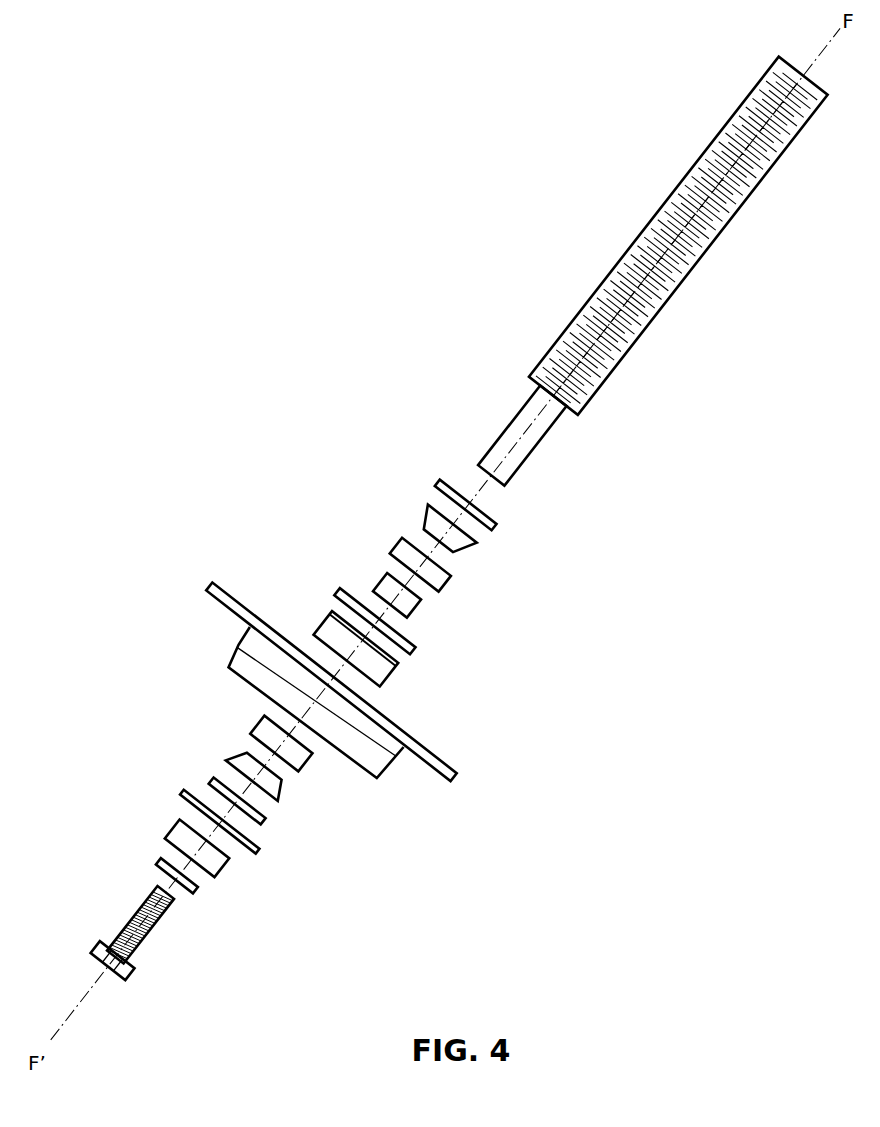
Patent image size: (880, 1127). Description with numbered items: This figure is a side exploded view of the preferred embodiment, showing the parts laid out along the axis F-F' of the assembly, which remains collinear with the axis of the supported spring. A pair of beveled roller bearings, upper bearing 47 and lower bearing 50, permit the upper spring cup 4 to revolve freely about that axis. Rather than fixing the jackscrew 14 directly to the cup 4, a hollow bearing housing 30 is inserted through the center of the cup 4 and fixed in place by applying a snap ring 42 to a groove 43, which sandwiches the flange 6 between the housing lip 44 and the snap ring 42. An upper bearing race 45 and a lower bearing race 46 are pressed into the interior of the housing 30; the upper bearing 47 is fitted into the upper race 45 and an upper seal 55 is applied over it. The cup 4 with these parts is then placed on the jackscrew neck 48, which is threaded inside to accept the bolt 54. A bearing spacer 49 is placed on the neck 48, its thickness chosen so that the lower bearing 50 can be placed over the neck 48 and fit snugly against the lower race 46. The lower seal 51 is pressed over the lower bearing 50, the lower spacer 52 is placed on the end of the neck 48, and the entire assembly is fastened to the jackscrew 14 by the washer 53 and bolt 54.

The upper spring cup 4 is at (375, 733).
The flange 6 is at (455, 774).
The jackscrew 14 is at (732, 200).
The bearing housing 30 is at (296, 578).
The snap ring 42 is at (256, 850).
The groove 43 is at (398, 663).
The housing lip 44 is at (413, 650).
The upper bearing race 45 is at (448, 578).
The lower bearing race 46 is at (297, 755).
The upper bearing 47 is at (470, 546).
The jackscrew neck 48 is at (527, 447).
The bearing spacer 49 is at (418, 603).
The lower bearing 50 is at (280, 780).
The lower seal 51 is at (262, 824).
The lower spacer 52 is at (178, 822).
The washer 53 is at (160, 858).
The bolt 54 is at (128, 918).
The upper seal 55 is at (493, 517).